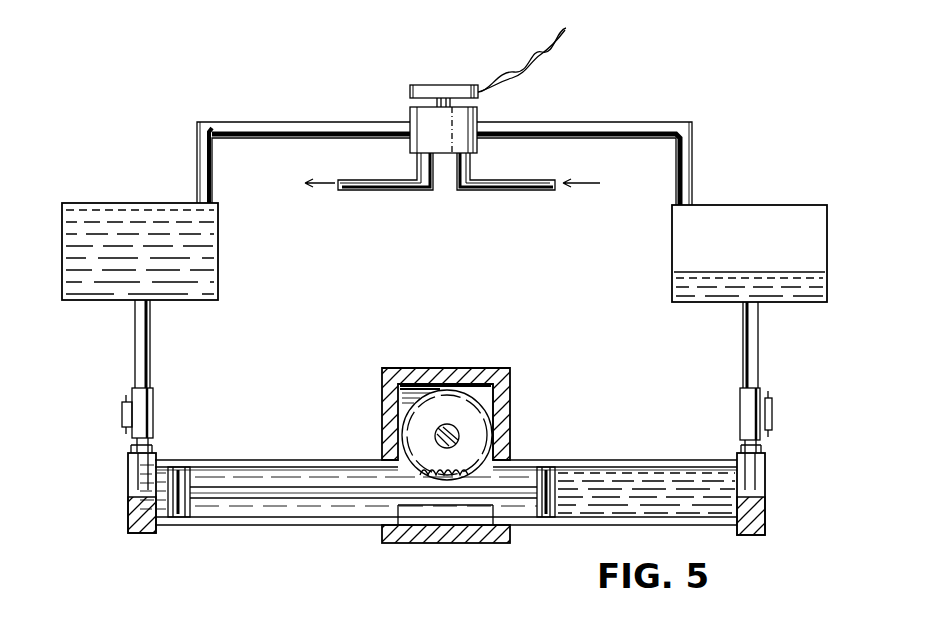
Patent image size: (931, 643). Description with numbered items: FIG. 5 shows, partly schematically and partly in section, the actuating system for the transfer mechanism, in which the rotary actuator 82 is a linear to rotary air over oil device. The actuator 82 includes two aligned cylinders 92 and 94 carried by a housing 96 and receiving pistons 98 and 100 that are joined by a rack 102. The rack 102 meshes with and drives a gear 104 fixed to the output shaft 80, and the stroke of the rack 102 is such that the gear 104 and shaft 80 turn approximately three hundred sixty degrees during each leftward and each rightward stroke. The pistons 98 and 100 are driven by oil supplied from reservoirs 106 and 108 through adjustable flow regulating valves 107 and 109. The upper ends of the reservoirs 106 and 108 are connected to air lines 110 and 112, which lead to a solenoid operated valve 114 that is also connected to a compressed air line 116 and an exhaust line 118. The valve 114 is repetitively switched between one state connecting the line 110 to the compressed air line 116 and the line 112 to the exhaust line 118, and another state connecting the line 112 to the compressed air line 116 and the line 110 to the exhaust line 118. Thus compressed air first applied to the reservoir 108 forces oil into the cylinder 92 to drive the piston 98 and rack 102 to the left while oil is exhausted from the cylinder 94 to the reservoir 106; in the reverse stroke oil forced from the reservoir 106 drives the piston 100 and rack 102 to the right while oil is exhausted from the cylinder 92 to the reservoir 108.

The output shaft 80 is at (460, 437).
The actuator 82 is at (510, 380).
The cylinder 92 is at (676, 459).
The cylinder 94 is at (262, 459).
The housing 96 is at (505, 440).
The piston 98 is at (550, 517).
The piston 100 is at (188, 517).
The rack 102 is at (318, 498).
The gear 104 is at (398, 405).
The reservoir 106 is at (210, 235).
The adjustable flow regulating valve 107 is at (153, 410).
The reservoir 108 is at (812, 247).
The adjustable flow regulating valve 109 is at (745, 400).
The air line 110 is at (351, 122).
The air line 112 is at (615, 122).
The solenoid operated valve 114 is at (478, 118).
The compressed air line 116 is at (510, 192).
The exhaust line 118 is at (360, 192).